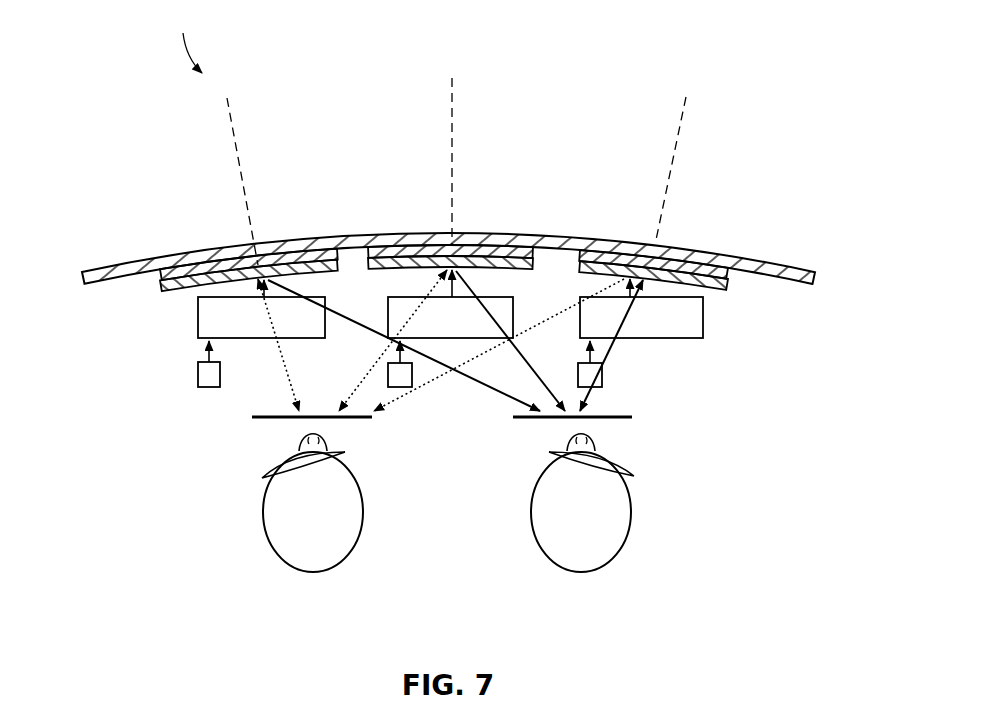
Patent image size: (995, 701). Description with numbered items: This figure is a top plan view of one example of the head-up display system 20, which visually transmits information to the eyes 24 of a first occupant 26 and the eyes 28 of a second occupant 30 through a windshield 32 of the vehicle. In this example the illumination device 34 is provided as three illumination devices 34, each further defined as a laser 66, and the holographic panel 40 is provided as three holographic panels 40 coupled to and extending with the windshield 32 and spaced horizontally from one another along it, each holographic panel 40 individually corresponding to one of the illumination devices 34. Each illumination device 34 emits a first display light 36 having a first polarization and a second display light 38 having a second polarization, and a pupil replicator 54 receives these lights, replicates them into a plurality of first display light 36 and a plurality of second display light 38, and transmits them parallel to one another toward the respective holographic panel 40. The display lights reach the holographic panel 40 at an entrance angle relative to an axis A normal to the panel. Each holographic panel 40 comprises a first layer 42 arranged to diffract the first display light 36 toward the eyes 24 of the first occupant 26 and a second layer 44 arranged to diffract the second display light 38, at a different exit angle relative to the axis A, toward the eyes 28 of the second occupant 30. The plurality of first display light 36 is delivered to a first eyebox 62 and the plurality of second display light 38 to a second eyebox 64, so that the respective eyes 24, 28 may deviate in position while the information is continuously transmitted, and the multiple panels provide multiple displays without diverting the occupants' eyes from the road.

The head-up display system 20 is at (185, 39).
The windshield 32 is at (815, 268).
The holographic panel 40 is at (409, 234).
The first layer 42 is at (188, 267).
The second layer 44 is at (162, 288).
The axis A is at (230, 110).
The pupil replicator 54 is at (198, 324).
The laser 66 is at (197, 378).
The illumination device 34 is at (200, 388).
The first eyebox 62 is at (263, 418).
The second eyebox 64 is at (628, 420).
The first display light 36 is at (258, 286).
The second display light 38 is at (296, 262).
The eyes 24 is at (262, 478).
The first occupant 26 is at (312, 562).
The eyes 28 is at (634, 476).
The second occupant 30 is at (580, 562).